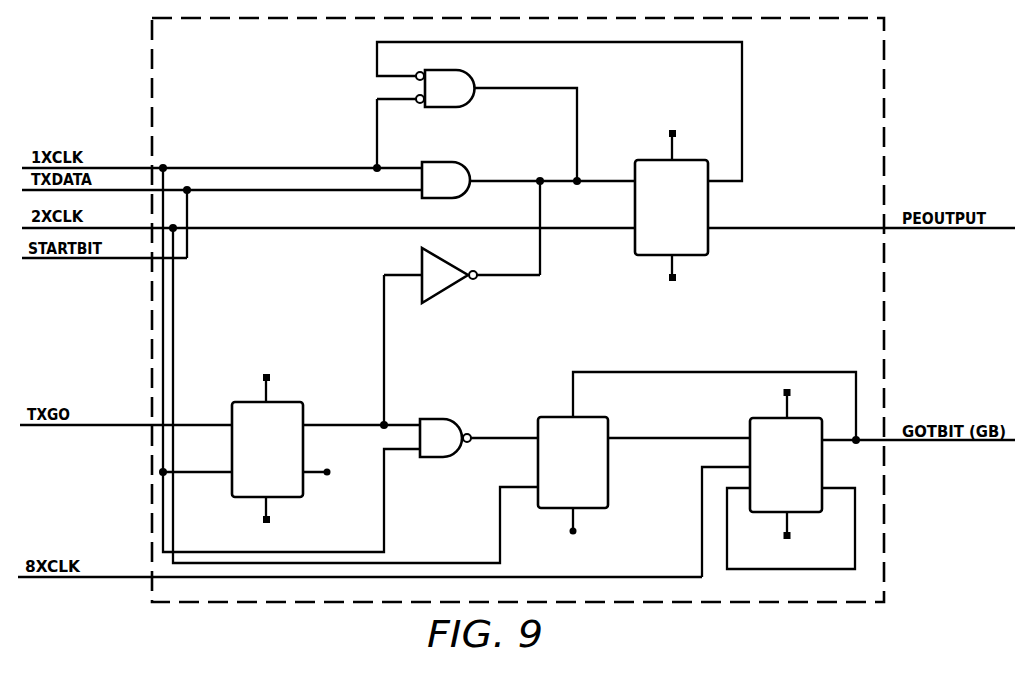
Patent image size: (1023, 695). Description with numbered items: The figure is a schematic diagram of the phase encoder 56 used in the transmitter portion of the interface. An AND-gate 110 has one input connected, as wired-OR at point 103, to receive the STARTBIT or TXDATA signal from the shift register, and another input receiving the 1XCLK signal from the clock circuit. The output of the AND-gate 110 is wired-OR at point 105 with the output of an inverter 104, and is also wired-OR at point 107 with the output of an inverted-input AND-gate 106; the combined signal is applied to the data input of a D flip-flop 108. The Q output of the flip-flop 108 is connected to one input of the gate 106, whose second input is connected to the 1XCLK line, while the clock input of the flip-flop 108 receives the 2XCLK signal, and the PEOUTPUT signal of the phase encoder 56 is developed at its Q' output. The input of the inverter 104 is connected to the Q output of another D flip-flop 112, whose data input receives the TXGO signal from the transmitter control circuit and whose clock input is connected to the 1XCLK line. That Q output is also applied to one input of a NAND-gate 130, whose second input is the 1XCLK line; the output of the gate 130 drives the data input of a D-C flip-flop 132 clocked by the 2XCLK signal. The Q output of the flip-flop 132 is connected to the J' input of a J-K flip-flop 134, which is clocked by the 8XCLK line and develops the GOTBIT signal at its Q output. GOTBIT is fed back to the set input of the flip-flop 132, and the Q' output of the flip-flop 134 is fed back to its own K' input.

The phase encoder 56 is at (887, 101).
The point 103 is at (189, 192).
The inverter 104 is at (446, 289).
The point 105 is at (538, 184).
The inverted-input AND-gate 106 is at (467, 73).
The point 107 is at (578, 184).
The D flip-flop 108 is at (708, 256).
The AND-gate 110 is at (456, 162).
The D flip-flop 112 is at (246, 402).
The NAND-gate 130 is at (445, 418).
The D-C flip-flop 132 is at (597, 417).
The J-K flip-flop 134 is at (758, 418).